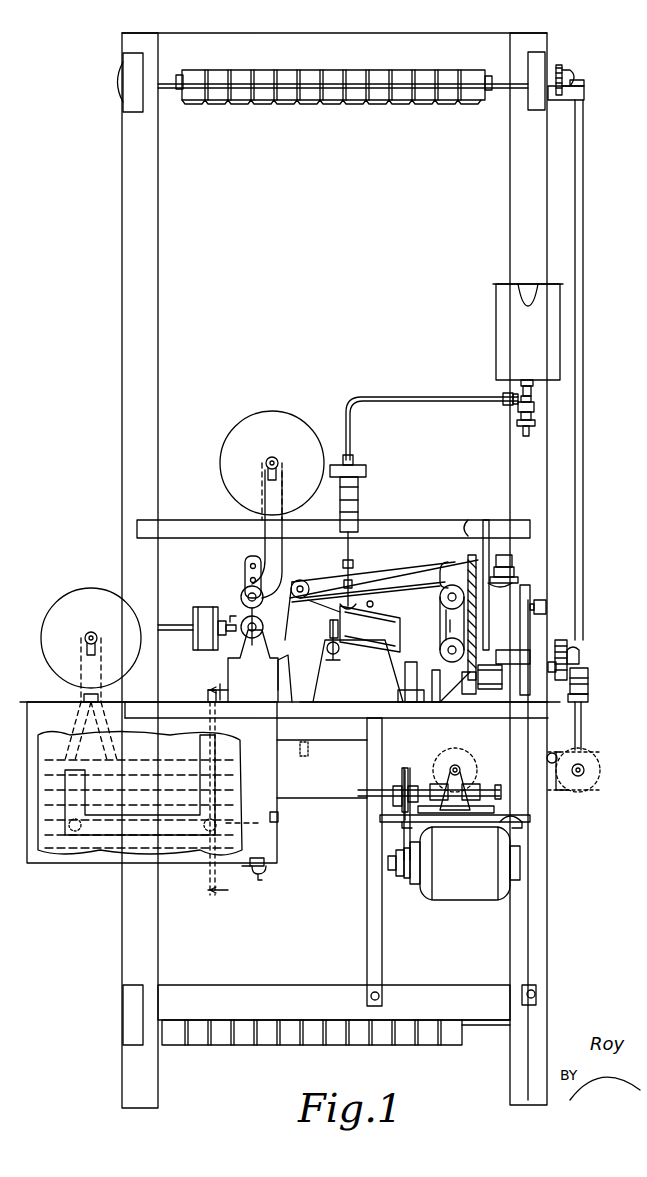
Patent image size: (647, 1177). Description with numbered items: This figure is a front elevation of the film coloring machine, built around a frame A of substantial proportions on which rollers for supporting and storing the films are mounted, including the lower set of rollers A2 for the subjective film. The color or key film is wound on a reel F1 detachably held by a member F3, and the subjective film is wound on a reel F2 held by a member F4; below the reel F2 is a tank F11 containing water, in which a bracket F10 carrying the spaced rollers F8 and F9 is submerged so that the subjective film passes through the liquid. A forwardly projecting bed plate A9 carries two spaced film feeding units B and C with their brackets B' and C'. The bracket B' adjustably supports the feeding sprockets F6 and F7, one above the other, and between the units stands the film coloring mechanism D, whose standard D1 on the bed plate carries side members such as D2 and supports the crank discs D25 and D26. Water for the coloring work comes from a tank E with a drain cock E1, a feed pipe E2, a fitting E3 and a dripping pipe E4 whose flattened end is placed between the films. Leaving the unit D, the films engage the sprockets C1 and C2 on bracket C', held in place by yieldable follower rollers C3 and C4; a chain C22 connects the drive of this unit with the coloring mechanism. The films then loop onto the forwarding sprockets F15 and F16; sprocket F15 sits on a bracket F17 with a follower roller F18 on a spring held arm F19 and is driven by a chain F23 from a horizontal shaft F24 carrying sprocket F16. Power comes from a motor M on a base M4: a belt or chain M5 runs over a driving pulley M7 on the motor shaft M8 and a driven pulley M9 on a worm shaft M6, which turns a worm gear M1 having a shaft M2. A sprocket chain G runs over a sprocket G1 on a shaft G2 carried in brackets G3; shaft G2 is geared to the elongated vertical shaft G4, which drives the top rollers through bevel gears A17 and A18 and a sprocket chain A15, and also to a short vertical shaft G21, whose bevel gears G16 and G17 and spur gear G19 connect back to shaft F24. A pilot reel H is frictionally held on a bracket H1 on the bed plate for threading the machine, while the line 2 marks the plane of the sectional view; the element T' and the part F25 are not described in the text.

The frame A is at (520, 263).
The lower set of rollers A2 is at (358, 104).
The sprocket chain A15 is at (560, 66).
The bevel gear A17 is at (572, 76).
The bevel gear A18 is at (584, 84).
The elongated vertical shaft G4 is at (583, 122).
The water tank E is at (512, 320).
The drain cock E1 is at (515, 421).
The feed pipe E2 is at (365, 404).
The fitting E3 is at (364, 468).
The dripping pipe E4 is at (345, 541).
The reel F1 is at (256, 430).
The member F3 is at (272, 532).
The film feeding sprocket F6 is at (248, 585).
The film feeding sprocket F7 is at (244, 618).
The spool F25 is at (205, 610).
The bracket B' is at (253, 666).
The film feeding unit B is at (286, 666).
The crank disc D25 is at (318, 563).
The film coloring mechanism D is at (329, 634).
The side member D2 is at (370, 626).
The crank disc D26 is at (333, 650).
The horizontal shaft F24 is at (348, 646).
The standard D1 is at (358, 671).
The bed plate A9 is at (296, 716).
The chain C22 is at (402, 582).
The sprocket C1 is at (440, 599).
The sprocket C2 is at (440, 652).
The film feeding unit C is at (438, 623).
The yieldable follower roller C4 is at (450, 628).
The yieldable follower roller C3 is at (480, 600).
The bracket C' is at (423, 682).
The bracket F17 is at (486, 530).
The forwarding sprocket F15 is at (512, 560).
The follower roller F18 is at (514, 571).
The spring held arm F19 is at (518, 582).
The reel H is at (532, 610).
The chain F23 is at (546, 607).
The spur gear G19 is at (560, 640).
The bevel gear G16 is at (580, 657).
The bevel gear G17 is at (584, 672).
The bracket H1 is at (588, 680).
The short vertical shaft G21 is at (588, 698).
The sprocket G1 is at (583, 722).
The bracket G3 is at (580, 764).
The shaft G2 is at (582, 780).
The sprocket chain G is at (554, 752).
The reel F2 is at (78, 598).
The member F4 is at (84, 696).
The section line 2 is at (201, 788).
The roller F8 is at (72, 828).
The bracket F10 is at (128, 824).
The roller F9 is at (278, 822).
The tank F11 is at (278, 762).
The tray T' is at (291, 790).
The motor M is at (455, 857).
The shaft M2 is at (460, 780).
The worm gear M1 is at (460, 768).
The driven pulley M9 is at (402, 778).
The worm shaft M6 is at (396, 792).
The belt or chain M5 is at (404, 832).
The motor shaft M8 is at (390, 860).
The driving pulley M7 is at (404, 870).
The base M4 is at (510, 812).
The forwarding sprocket F16 is at (452, 699).